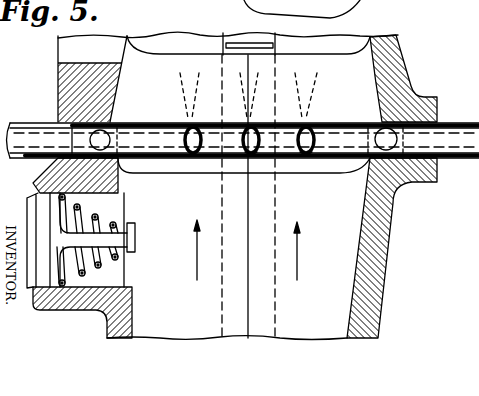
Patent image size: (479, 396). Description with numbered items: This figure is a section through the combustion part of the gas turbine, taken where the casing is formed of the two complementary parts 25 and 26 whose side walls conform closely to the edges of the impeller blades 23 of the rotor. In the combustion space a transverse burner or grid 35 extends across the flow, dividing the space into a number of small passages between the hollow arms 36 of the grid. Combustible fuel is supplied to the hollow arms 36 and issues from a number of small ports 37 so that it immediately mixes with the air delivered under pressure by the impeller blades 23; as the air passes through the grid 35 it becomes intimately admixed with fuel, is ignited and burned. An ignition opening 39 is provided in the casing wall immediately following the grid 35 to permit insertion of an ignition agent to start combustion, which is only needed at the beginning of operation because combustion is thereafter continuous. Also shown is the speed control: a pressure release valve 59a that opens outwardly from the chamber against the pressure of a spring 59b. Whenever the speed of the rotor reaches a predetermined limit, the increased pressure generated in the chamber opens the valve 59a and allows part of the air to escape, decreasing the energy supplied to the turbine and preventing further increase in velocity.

The impeller blades 23 is at (243, 43).
The complementary casing part 25 is at (375, 335).
The complementary casing part 26 is at (107, 337).
The transverse burner or grid 35 is at (137, 118).
The hollow arms 36 is at (300, 157).
The small ports 37 is at (189, 120).
The ignition opening 39 is at (70, 50).
The pressure release valve 59a is at (27, 290).
The spring 59b is at (120, 267).